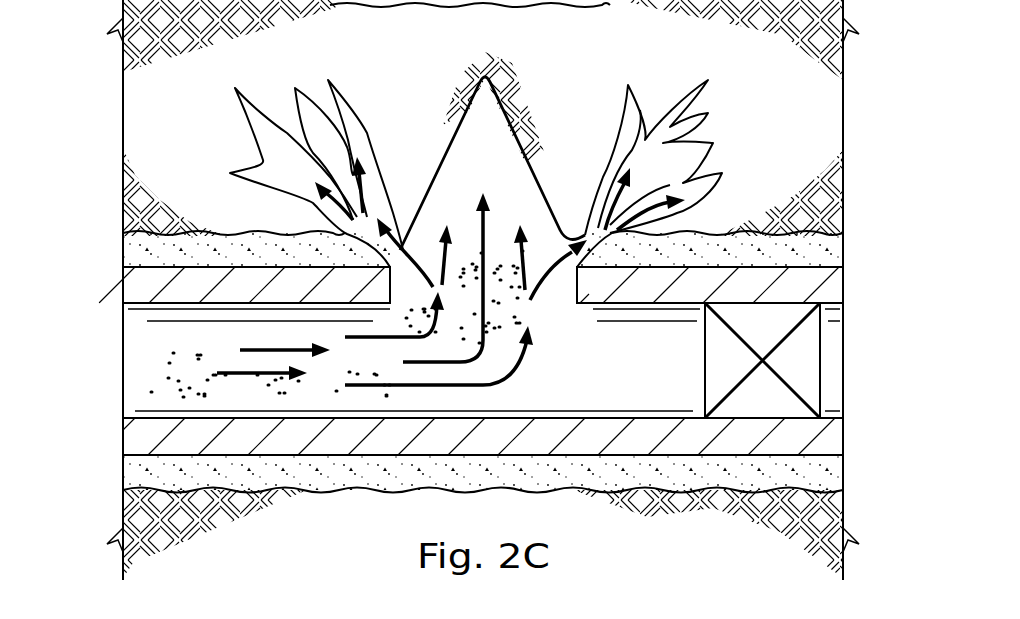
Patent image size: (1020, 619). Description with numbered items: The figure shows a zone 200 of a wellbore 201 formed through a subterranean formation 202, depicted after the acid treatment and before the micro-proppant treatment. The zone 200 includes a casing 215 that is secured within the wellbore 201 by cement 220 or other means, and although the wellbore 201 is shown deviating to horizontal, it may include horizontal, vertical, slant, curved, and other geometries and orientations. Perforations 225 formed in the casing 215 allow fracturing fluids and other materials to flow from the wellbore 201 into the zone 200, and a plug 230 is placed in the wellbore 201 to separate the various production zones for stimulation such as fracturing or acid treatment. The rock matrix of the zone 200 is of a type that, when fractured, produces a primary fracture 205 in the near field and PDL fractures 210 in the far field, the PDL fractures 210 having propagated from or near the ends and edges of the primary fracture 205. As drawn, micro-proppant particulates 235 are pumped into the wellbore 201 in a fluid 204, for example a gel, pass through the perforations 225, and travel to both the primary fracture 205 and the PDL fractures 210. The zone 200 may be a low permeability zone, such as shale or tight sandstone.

The zone 200 is at (88, 399).
The wellbore 201 is at (133, 344).
The subterranean formation 202 is at (505, 47).
The fluid 204 is at (487, 392).
The primary hydraulic fracture 205 is at (436, 152).
The PDL fractures 210 is at (268, 88).
The casing 215 is at (133, 284).
The cement 220 is at (133, 252).
The perforations 225 is at (558, 305).
The plug 230 is at (702, 362).
The micro-proppant particulates 235 is at (150, 380).